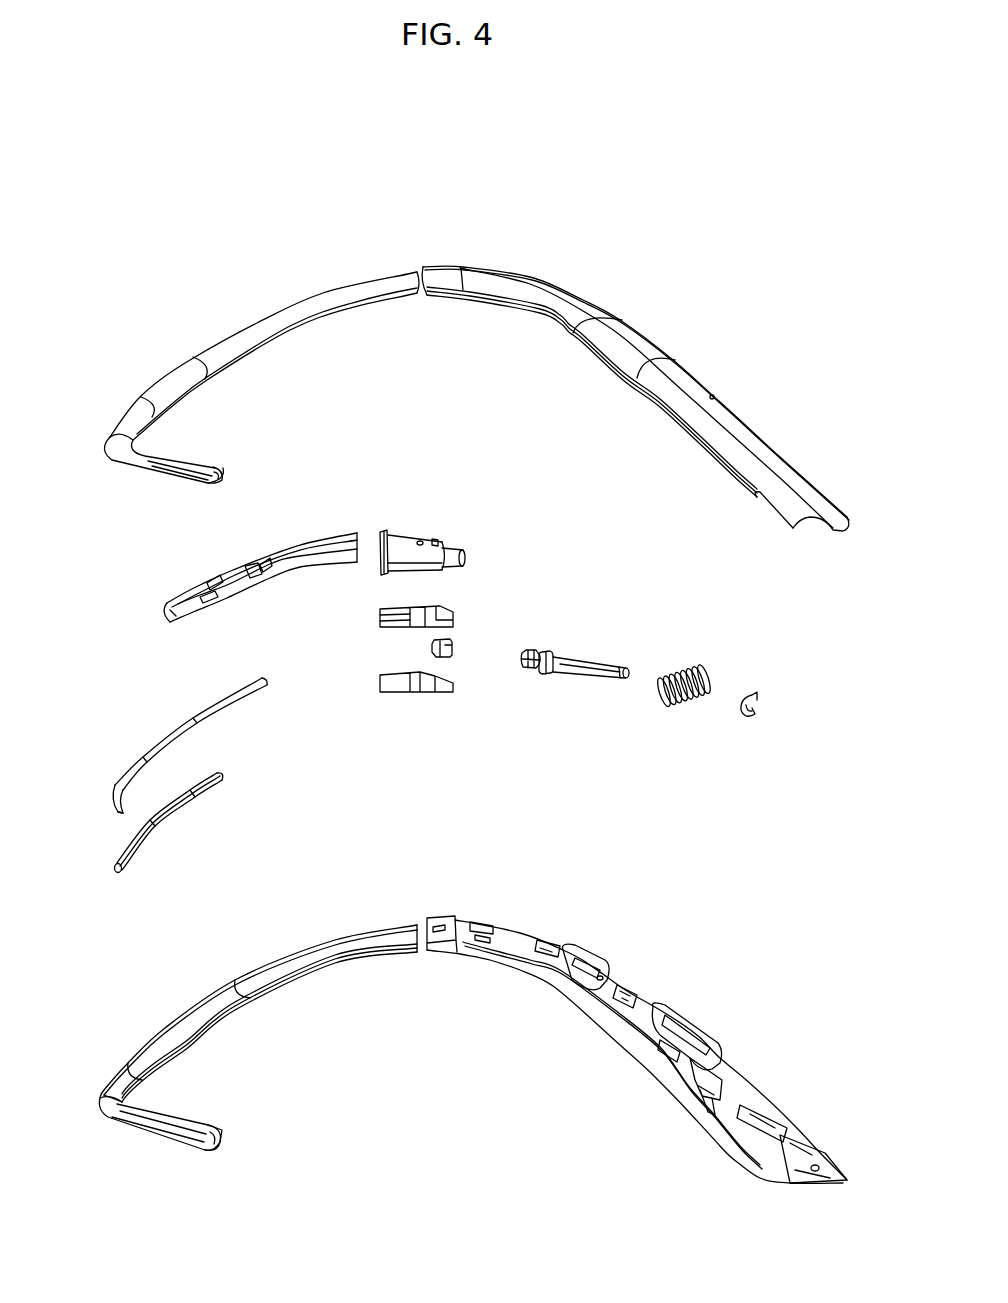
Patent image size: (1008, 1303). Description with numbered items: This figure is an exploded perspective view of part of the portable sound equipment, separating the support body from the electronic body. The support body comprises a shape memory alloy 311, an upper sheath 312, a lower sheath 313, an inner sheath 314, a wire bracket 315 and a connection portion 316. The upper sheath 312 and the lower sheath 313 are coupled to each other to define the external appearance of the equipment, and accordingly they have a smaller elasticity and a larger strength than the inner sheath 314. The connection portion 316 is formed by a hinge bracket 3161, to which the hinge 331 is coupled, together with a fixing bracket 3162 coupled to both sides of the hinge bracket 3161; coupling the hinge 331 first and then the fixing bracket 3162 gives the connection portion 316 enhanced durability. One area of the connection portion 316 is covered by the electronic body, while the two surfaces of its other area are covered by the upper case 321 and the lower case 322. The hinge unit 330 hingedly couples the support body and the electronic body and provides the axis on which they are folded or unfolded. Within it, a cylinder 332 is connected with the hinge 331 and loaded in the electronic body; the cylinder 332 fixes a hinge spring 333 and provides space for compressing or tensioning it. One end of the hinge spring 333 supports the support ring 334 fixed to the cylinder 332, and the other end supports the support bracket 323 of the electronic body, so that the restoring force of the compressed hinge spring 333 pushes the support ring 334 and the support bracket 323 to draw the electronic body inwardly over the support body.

The shape memory alloy 311 is at (117, 783).
The upper sheath 312 is at (180, 387).
The lower sheath 313 is at (127, 1080).
The inner sheath 314 is at (113, 860).
The wire bracket 315 is at (180, 600).
The connection portion 316 is at (433, 692).
The hinge bracket 3161 is at (453, 653).
The fixing bracket 3162 is at (410, 623).
The upper case 321 is at (553, 313).
The lower case 322 is at (620, 1040).
The support bracket 323 is at (407, 547).
The hinge unit 330 is at (606, 761).
The hinge 331 is at (528, 663).
The cylinder 332 is at (580, 668).
The hinge spring 333 is at (682, 700).
The support ring 334 is at (760, 772).